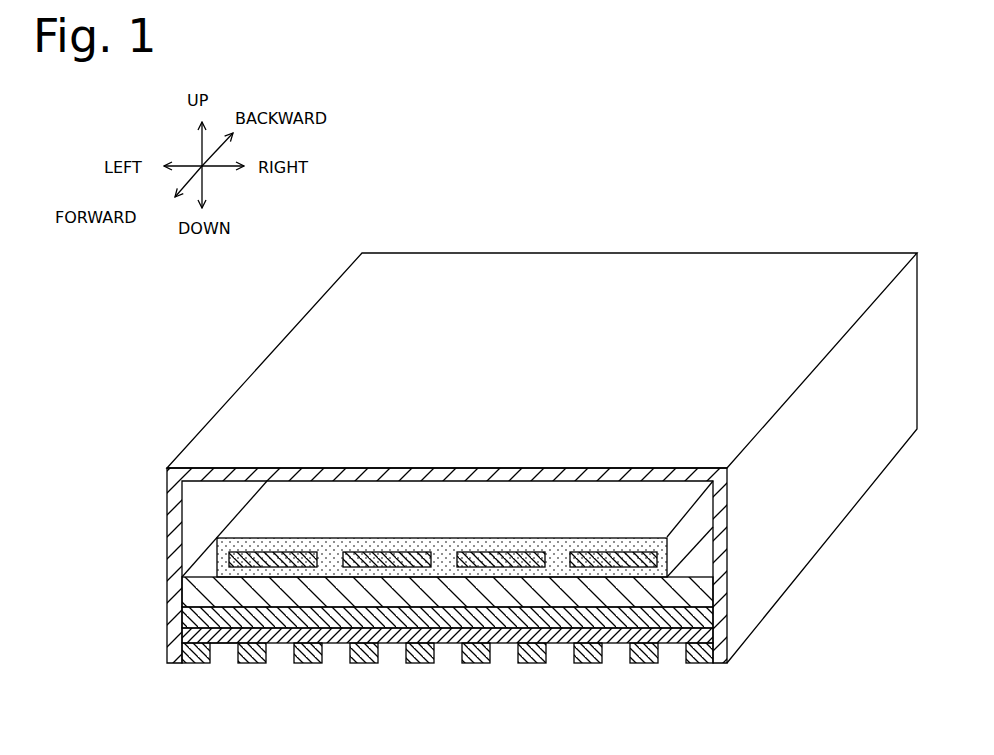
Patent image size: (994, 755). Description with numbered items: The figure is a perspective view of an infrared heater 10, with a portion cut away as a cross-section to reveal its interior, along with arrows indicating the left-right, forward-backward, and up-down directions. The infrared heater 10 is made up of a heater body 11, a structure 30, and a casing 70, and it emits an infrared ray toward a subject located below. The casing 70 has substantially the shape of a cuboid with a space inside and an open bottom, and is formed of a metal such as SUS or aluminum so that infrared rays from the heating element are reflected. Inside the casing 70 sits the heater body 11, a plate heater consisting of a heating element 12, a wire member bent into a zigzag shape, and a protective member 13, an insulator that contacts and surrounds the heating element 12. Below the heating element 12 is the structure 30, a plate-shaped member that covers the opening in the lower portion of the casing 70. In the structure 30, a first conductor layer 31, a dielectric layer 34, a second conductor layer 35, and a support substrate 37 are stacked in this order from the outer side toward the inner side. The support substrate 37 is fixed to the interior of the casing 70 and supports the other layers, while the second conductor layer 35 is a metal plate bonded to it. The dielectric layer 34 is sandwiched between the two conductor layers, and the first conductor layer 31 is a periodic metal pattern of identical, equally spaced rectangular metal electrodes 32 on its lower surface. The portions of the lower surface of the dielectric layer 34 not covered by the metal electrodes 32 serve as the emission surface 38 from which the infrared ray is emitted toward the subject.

The infrared heater 10 is at (782, 188).
The casing 70 is at (182, 487).
The heater body 11 is at (108, 520).
The protective member 13 is at (220, 540).
The heating element 12 is at (232, 557).
The structure 30 is at (108, 582).
The support substrate 37 is at (186, 592).
The second conductor layer 35 is at (188, 620).
The dielectric layer 34 is at (188, 634).
The first conductor layer 31 is at (187, 670).
The metal electrodes 32 is at (197, 650).
The emission surface 38 is at (393, 643).